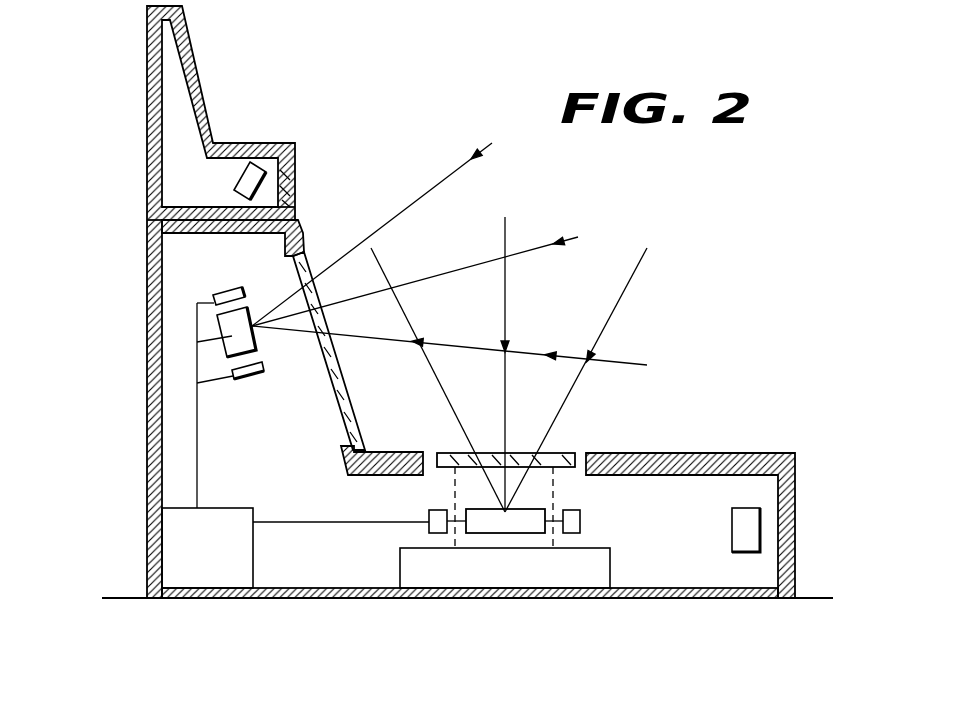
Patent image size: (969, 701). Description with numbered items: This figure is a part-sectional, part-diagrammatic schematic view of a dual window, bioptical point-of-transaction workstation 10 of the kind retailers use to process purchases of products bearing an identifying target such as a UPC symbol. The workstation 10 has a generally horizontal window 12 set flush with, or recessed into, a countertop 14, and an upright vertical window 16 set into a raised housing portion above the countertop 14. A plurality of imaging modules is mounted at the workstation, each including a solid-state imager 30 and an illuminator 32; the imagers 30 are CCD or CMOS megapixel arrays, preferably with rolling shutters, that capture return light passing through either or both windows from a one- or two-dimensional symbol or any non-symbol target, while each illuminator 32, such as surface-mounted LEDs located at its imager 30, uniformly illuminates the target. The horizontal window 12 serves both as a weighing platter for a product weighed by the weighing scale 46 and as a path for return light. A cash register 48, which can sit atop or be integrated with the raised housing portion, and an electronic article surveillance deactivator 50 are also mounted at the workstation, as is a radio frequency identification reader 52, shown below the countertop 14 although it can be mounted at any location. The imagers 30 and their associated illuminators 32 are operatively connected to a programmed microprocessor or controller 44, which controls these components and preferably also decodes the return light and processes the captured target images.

The point-of-transaction workstation 10 is at (726, 399).
The horizontal window 12 is at (546, 453).
The countertop 14 is at (745, 452).
The vertical window 16 is at (312, 252).
The imager 30 is at (555, 608).
The illuminator 32 is at (692, 622).
The controller 44 is at (190, 547).
The weighing scale 46 is at (408, 565).
The cash register 48 is at (147, 97).
The EAS deactivator 50 is at (247, 175).
The RFID reader 52 is at (750, 531).